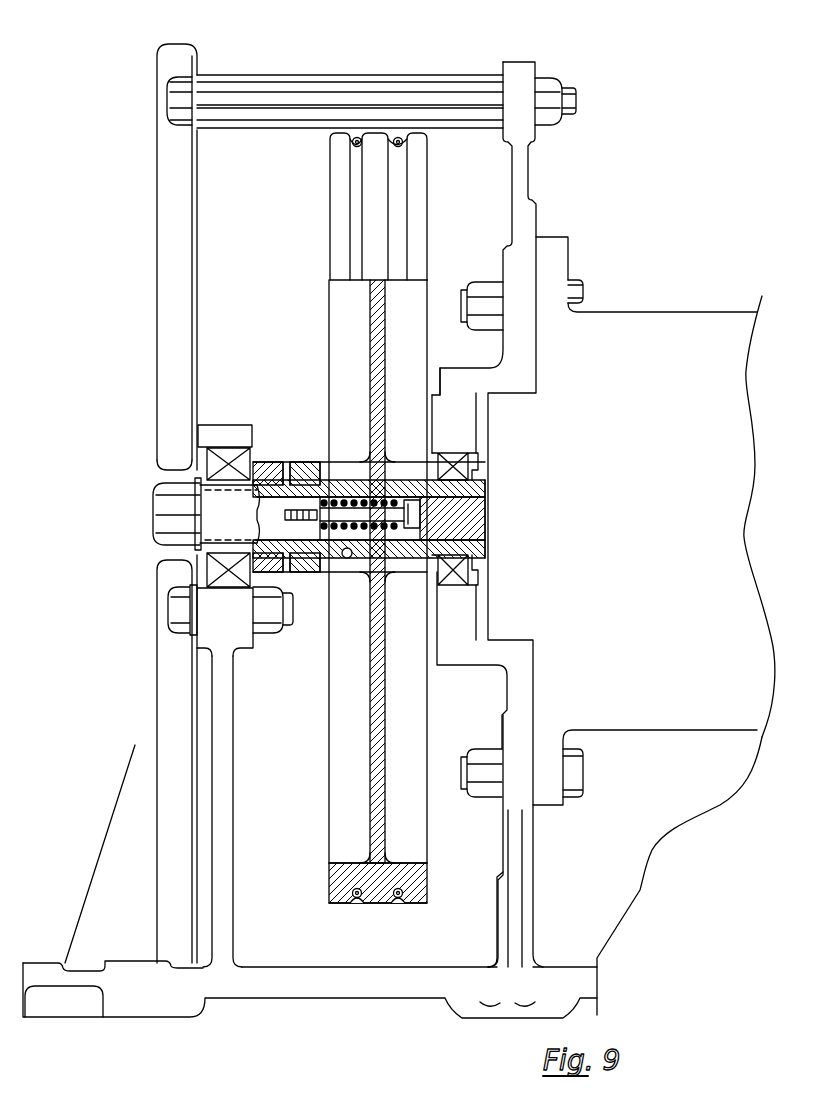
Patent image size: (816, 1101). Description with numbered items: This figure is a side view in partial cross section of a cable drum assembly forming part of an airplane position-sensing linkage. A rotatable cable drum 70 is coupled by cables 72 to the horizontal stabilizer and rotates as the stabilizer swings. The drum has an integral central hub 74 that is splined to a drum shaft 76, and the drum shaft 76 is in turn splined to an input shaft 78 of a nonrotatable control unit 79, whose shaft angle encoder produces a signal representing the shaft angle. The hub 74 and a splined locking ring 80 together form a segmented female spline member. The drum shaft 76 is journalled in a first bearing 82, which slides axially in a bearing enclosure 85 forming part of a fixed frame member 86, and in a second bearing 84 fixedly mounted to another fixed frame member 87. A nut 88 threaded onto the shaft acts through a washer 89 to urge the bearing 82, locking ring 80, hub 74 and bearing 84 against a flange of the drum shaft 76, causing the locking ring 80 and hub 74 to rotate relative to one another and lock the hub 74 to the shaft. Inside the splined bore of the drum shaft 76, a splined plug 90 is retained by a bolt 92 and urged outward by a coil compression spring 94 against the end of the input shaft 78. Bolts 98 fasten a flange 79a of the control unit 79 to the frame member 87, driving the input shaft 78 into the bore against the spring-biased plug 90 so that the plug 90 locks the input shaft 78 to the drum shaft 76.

The cable drum 70 is at (328, 214).
The cables 72 is at (398, 136).
The central hub 74 is at (315, 462).
The drum shaft 76 is at (470, 488).
The input shaft 78 is at (488, 511).
The control unit 79 is at (676, 712).
The flange 79a is at (560, 247).
The splined locking ring 80 is at (268, 462).
The first bearing 82 is at (228, 447).
The second bearing 84 is at (470, 452).
The bearing enclosure 85 is at (207, 425).
The fixed frame member 86 is at (168, 307).
The fixed frame member 87 is at (452, 388).
The nut 88 is at (150, 477).
The washer 89 is at (150, 521).
The splined plug 90 is at (405, 462).
The bolt 92 is at (352, 462).
The coil compression spring 94 is at (341, 566).
The bolts 98 is at (583, 295).